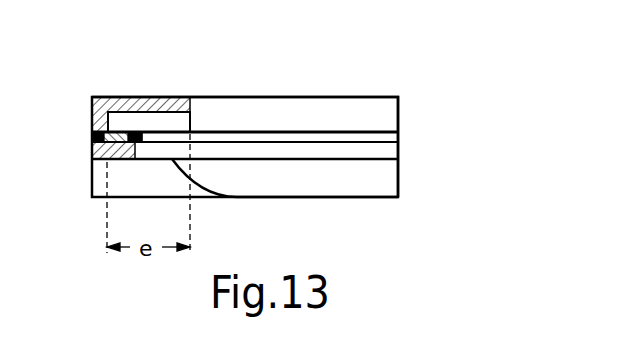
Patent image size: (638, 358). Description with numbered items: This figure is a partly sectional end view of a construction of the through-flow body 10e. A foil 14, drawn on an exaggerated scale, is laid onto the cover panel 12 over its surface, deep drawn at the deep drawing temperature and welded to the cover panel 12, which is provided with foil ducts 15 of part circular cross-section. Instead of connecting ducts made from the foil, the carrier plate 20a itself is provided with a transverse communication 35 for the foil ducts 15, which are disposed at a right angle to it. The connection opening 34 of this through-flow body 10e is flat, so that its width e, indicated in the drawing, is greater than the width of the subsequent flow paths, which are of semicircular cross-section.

The through-flow body 10e is at (178, 269).
The cover panel 12 is at (93, 162).
The foil 14 is at (92, 140).
The foil ducts 15 is at (355, 180).
The carrier plate 20a is at (322, 117).
The connection opening 34 is at (124, 100).
The transverse communication 35 is at (170, 122).